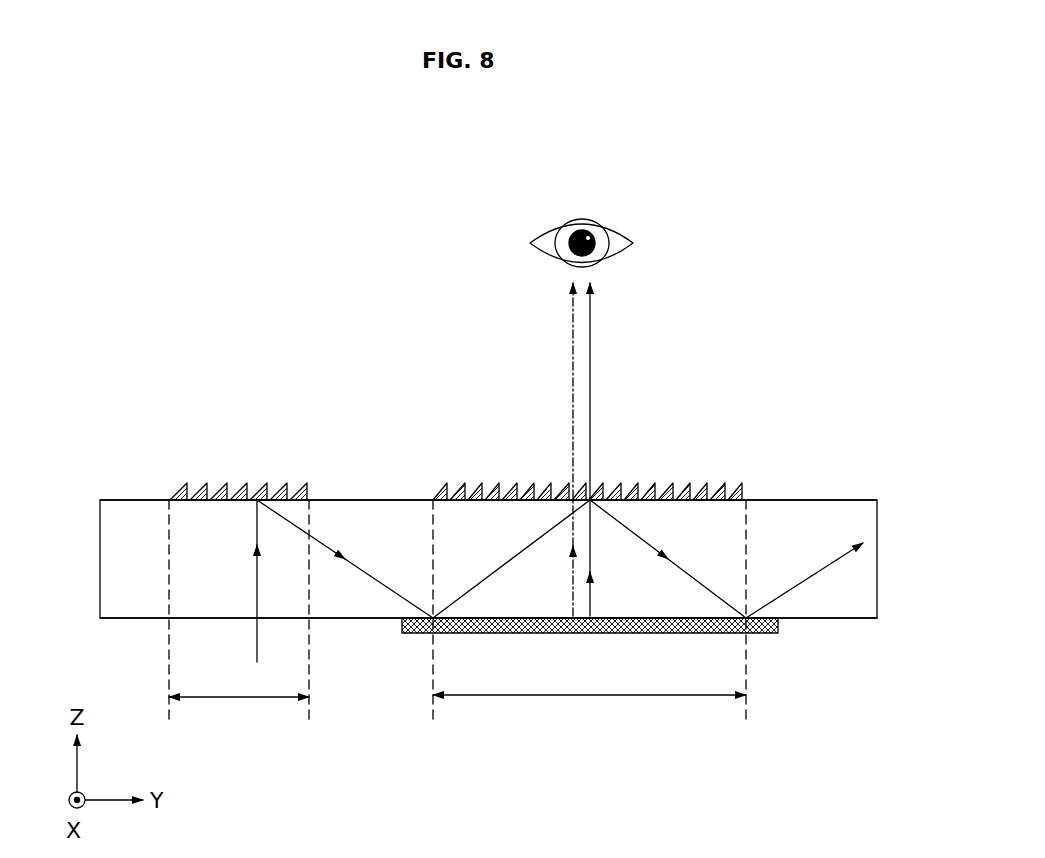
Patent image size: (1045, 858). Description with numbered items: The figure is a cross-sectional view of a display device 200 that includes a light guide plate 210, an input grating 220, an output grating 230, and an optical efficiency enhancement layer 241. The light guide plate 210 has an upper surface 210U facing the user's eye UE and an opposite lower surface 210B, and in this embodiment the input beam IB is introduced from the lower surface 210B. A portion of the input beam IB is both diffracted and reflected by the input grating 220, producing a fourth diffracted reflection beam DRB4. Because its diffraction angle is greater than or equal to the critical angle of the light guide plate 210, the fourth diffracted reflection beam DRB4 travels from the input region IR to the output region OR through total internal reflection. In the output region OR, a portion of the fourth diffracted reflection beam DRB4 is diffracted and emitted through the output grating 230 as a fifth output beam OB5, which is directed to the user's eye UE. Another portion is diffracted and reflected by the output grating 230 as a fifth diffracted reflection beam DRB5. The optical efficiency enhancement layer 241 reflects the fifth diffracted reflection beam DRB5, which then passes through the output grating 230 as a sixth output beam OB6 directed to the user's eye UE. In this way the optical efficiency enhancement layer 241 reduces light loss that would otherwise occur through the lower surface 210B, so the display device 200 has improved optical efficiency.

The display device 200 is at (812, 182).
The light guide plate 210 is at (877, 583).
The upper surface 210U is at (805, 500).
The lower surface 210B is at (138, 620).
The input grating 220 is at (170, 483).
The output grating 230 is at (432, 483).
The optical efficiency enhancement layer 241 is at (767, 634).
The user's eye UE is at (630, 218).
The input beam IB is at (257, 588).
The fifth output beam OB5 is at (590, 352).
The sixth output beam OB6 is at (572, 352).
The fourth diffracted reflection beam DRB4 is at (385, 590).
The fifth diffracted reflection beam DRB5 is at (590, 598).
The input region IR is at (239, 712).
The output region OR is at (589, 710).